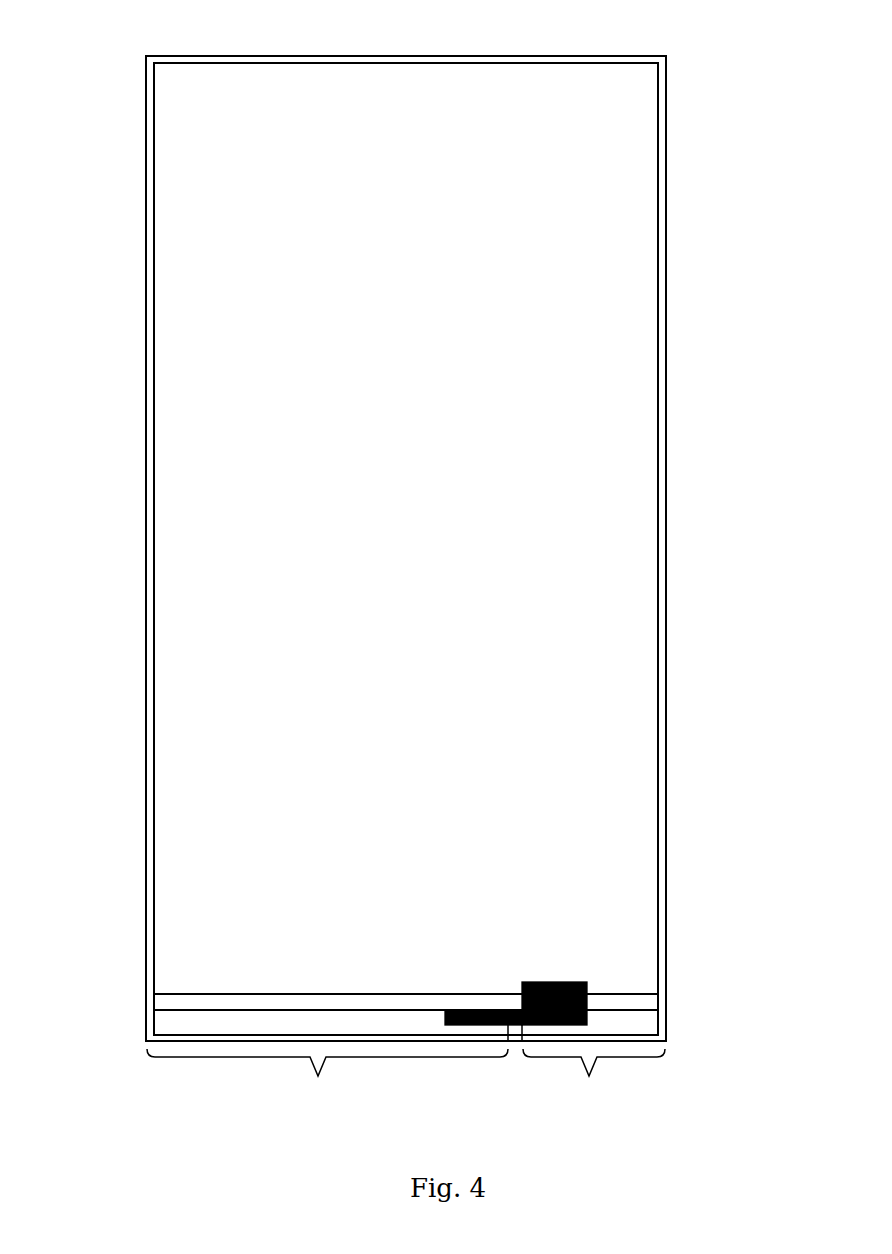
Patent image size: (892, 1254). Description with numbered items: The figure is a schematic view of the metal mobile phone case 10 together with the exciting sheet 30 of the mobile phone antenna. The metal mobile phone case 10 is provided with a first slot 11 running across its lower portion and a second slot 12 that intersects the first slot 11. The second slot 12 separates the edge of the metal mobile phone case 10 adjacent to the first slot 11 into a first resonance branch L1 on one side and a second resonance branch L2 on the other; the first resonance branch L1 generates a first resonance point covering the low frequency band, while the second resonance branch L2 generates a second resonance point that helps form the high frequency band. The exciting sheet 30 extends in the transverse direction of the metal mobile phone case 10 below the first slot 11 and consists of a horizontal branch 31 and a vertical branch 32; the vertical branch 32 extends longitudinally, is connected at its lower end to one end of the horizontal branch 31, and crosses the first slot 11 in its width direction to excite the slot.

The metal mobile phone case 10 is at (385, 97).
The first slot 11 is at (192, 1002).
The second slot 12 is at (518, 1037).
The exciting sheet 30 is at (611, 880).
The horizontal branch 31 is at (463, 1008).
The vertical branch 32 is at (562, 982).
The first resonance branch L1 is at (327, 1077).
The second resonance branch L2 is at (594, 1077).